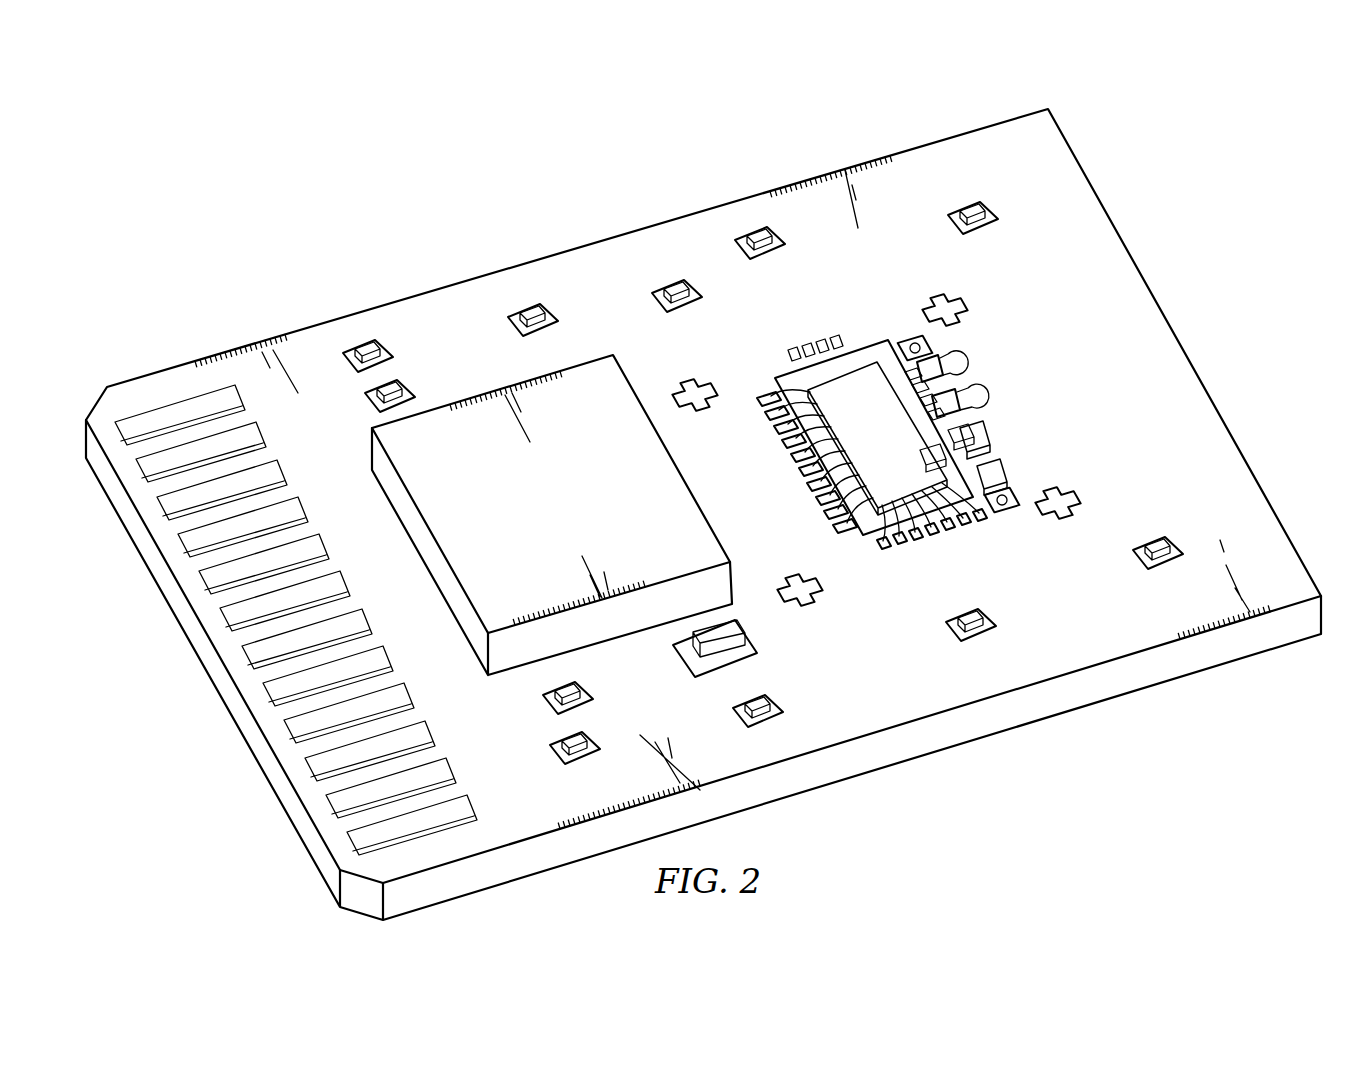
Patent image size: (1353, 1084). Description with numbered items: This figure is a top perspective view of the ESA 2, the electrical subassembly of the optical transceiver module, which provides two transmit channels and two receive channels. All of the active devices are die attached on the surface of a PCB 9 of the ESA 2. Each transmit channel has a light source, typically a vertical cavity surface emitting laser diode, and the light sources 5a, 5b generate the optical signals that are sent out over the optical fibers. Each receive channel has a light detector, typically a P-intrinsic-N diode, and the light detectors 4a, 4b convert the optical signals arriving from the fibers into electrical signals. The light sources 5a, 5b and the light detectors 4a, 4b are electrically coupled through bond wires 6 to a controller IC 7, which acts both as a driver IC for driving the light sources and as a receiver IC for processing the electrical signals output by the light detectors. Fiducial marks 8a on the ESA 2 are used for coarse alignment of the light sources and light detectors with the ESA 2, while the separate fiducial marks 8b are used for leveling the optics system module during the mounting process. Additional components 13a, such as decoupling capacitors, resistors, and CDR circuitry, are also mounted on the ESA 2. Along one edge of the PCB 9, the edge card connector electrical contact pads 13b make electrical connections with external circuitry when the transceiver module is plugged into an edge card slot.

The ESA 2 is at (362, 213).
The light detector 4a is at (998, 470).
The light detector 4b is at (988, 440).
The light source 5a is at (960, 393).
The light source 5b is at (943, 360).
The bond wires 6 is at (968, 440).
The controller IC 7 is at (865, 372).
The fiducial marks 8a is at (905, 335).
The fiducial marks 8b is at (965, 305).
The PCB 9 is at (1124, 303).
The additional components 13a is at (355, 347).
The edge card connector electrical contact pads 13b is at (212, 578).